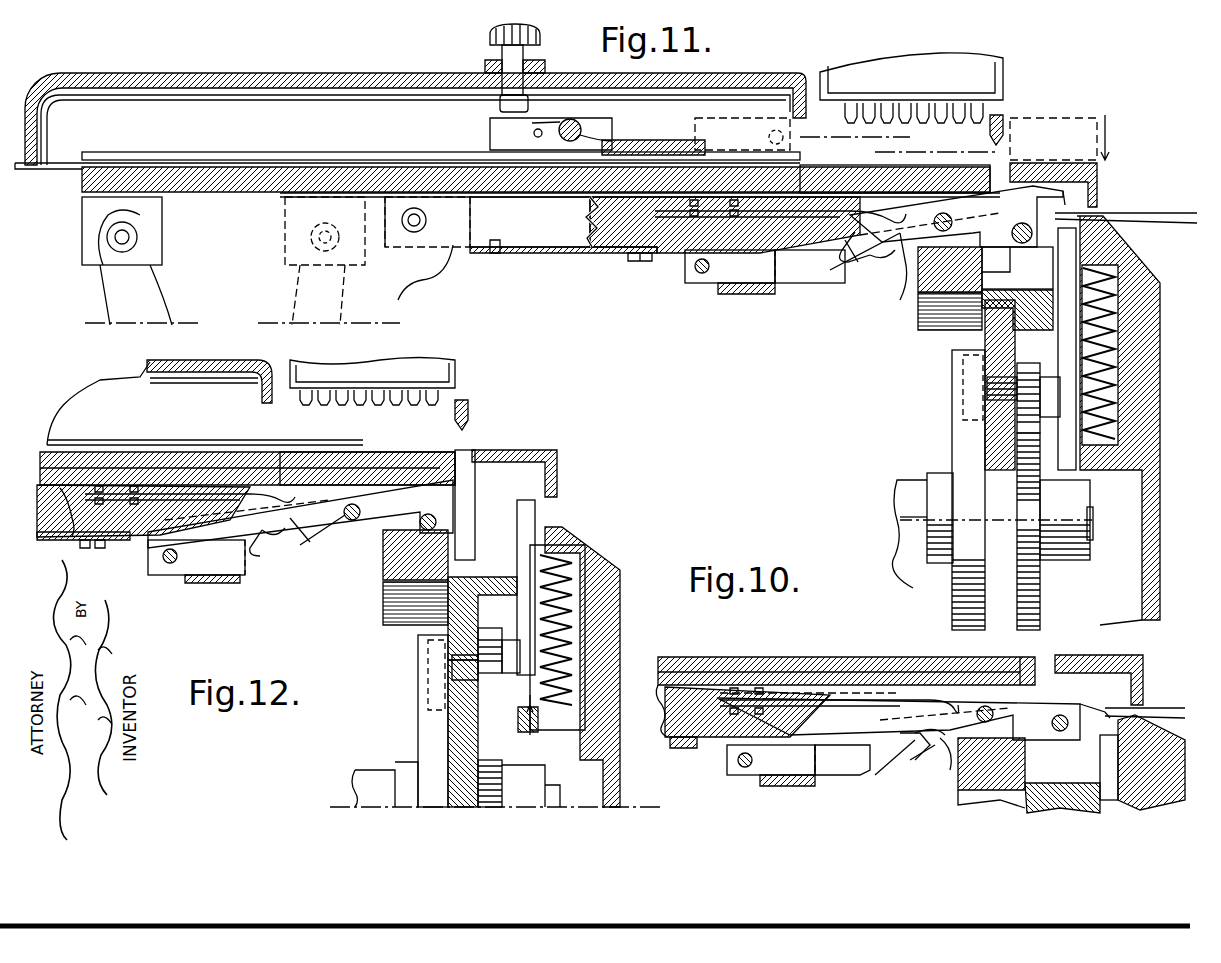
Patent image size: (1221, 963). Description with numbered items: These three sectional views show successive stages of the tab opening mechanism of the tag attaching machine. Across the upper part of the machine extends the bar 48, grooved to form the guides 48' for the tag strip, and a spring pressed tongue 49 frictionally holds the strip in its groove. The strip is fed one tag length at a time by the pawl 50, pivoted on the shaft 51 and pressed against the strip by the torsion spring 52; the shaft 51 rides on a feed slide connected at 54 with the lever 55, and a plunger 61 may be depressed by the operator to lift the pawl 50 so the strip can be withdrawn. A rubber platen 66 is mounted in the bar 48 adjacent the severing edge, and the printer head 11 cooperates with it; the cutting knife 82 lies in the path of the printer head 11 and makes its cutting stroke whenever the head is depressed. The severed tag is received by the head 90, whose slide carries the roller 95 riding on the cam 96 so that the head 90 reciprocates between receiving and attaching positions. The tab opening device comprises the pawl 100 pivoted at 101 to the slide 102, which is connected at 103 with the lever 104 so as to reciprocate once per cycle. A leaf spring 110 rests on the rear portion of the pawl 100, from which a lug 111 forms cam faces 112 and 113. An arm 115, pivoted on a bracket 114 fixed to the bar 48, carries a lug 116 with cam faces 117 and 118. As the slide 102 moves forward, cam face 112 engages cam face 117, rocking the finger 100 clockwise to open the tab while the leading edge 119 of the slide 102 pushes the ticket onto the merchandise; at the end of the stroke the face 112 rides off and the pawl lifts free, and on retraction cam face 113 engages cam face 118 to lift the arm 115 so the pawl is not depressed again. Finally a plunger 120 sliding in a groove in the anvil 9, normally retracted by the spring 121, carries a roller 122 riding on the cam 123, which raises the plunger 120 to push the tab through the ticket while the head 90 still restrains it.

In FIG. 11, the anvil 9 is at (1140, 268).
In FIG. 10, the anvil 9 is at (1170, 752).
In FIG. 12, the anvil 9 is at (598, 548).
In FIG. 11, the printer head 11 is at (978, 62).
In FIG. 12, the printer head 11 is at (415, 365).
In FIG. 11, the bar 48 is at (541, 164).
In FIG. 11, the guides 48' is at (407, 150).
In FIG. 11, the spring pressed tongue 49 is at (345, 155).
In FIG. 11, the pawl 50 is at (755, 152).
In FIG. 11, the shaft 51 is at (580, 126).
In FIG. 11, the torsion spring 52 is at (606, 135).
In FIG. 11, the connection 54 is at (140, 237).
In FIG. 11, the lever 55 is at (153, 293).
In FIG. 11, the plunger 61 is at (505, 47).
In FIG. 11, the rubber platen 66 is at (936, 166).
In FIG. 10, the rubber platen 66 is at (925, 658).
In FIG. 12, the rubber platen 66 is at (385, 453).
In FIG. 11, the cutting knife 82 is at (1005, 121).
In FIG. 12, the cutting knife 82 is at (470, 412).
In FIG. 11, the head 90 is at (1064, 165).
In FIG. 10, the head 90 is at (1090, 658).
In FIG. 12, the head 90 is at (535, 452).
In FIG. 10, the roller 95 is at (966, 357).
In FIG. 12, the roller 95 is at (432, 647).
In FIG. 10, the cam 96 is at (960, 435).
In FIG. 12, the cam 96 is at (425, 720).
In FIG. 11, the pawl 100 is at (1017, 256).
In FIG. 10, the pawl 100 is at (1044, 724).
In FIG. 12, the pawl 100 is at (420, 514).
In FIG. 11, the pivot 101 is at (942, 213).
In FIG. 10, the pivot 101 is at (985, 706).
In FIG. 12, the pivot 101 is at (352, 504).
In FIG. 11, the slide 102 is at (642, 256).
In FIG. 10, the slide 102 is at (662, 745).
In FIG. 12, the slide 102 is at (120, 540).
In FIG. 11, the connection 103 is at (412, 235).
In FIG. 11, the lever 104 is at (410, 288).
In FIG. 11, the leaf spring 110 is at (860, 214).
In FIG. 10, the leaf spring 110 is at (935, 697).
In FIG. 12, the leaf spring 110 is at (262, 500).
In FIG. 11, the lug 111 is at (888, 258).
In FIG. 10, the lug 111 is at (925, 736).
In FIG. 12, the lug 111 is at (280, 540).
In FIG. 11, the cam face 112 is at (905, 308).
In FIG. 10, the cam face 112 is at (948, 775).
In FIG. 11, the cam face 113 is at (855, 220).
In FIG. 10, the cam face 113 is at (945, 714).
In FIG. 12, the cam face 113 is at (270, 560).
In FIG. 11, the bracket 114 is at (678, 268).
In FIG. 10, the bracket 114 is at (722, 752).
In FIG. 12, the bracket 114 is at (145, 545).
In FIG. 11, the arm 115 is at (808, 285).
In FIG. 10, the arm 115 is at (846, 776).
In FIG. 12, the arm 115 is at (252, 550).
In FIG. 11, the lug 116 is at (843, 272).
In FIG. 10, the lug 116 is at (893, 772).
In FIG. 12, the lug 116 is at (320, 538).
In FIG. 11, the cam face 117 is at (855, 260).
In FIG. 10, the cam face 117 is at (890, 752).
In FIG. 12, the cam face 117 is at (254, 541).
In FIG. 11, the cam face 118 is at (868, 266).
In FIG. 10, the cam face 118 is at (928, 755).
In FIG. 12, the cam face 118 is at (330, 540).
In FIG. 11, the leading edge 119 is at (1037, 250).
In FIG. 10, the leading edge 119 is at (1108, 740).
In FIG. 12, the leading edge 119 is at (450, 520).
In FIG. 10, the plunger 120 is at (1060, 312).
In FIG. 12, the plunger 120 is at (530, 545).
In FIG. 10, the spring 121 is at (1085, 318).
In FIG. 12, the spring 121 is at (580, 580).
In FIG. 10, the roller 122 is at (1045, 358).
In FIG. 12, the roller 122 is at (490, 632).
In FIG. 10, the cam 123 is at (1040, 612).
In FIG. 12, the cam 123 is at (520, 800).